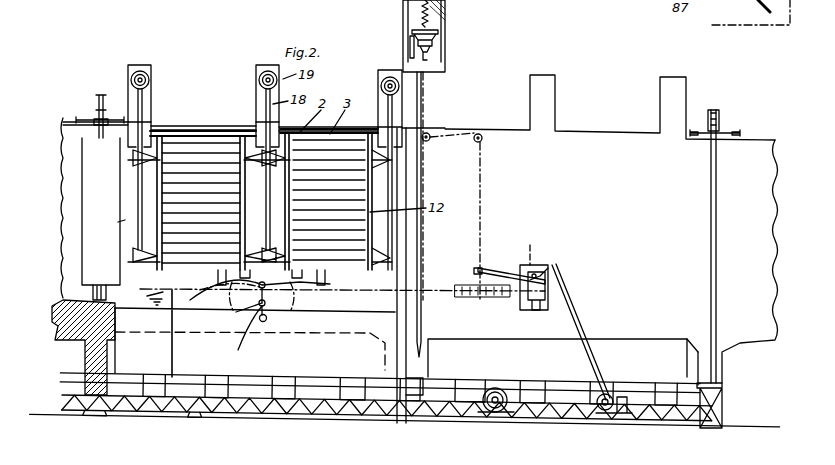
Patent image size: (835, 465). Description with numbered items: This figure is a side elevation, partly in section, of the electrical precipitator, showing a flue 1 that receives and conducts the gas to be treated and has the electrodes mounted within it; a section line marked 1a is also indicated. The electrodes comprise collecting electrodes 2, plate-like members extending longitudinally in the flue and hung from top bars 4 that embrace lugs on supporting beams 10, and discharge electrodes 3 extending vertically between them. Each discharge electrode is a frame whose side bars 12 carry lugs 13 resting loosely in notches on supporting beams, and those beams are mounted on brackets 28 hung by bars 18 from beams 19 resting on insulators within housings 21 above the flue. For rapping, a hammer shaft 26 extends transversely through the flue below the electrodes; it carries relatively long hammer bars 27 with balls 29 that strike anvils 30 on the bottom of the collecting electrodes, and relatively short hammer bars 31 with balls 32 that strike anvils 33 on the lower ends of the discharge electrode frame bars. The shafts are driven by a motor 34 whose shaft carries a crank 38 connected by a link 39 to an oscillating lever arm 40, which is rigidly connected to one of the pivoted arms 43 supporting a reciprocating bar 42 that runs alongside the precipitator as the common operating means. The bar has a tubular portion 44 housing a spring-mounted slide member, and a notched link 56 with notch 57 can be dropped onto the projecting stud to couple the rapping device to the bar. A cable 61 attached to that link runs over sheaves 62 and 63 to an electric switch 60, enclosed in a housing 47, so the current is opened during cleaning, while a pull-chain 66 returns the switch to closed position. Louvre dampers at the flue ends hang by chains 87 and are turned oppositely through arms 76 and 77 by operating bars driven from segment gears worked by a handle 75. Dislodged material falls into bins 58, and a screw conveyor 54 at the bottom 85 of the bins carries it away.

The flue 1 is at (160, 180).
The section line 1a- 1a is at (200, 283).
The collecting electrode 2 is at (168, 134).
The discharge electrode 3 is at (200, 136).
The top bar 4 is at (746, 18).
The supporting beam 10 is at (375, 140).
The side bar 12 is at (155, 238).
The lug 13 is at (384, 162).
The bar 18 is at (143, 103).
The beam 19 is at (130, 78).
The housing 21 is at (258, 77).
The hammer shaft 26 is at (259, 286).
The long hammer bar 27 is at (247, 332).
The bracket 28 is at (131, 160).
The ball 29 is at (267, 319).
The anvil 30 is at (215, 285).
The short hammer bar 31 is at (300, 295).
The ball 32 is at (255, 306).
The anvil 33 is at (150, 306).
The motor 34 is at (492, 414).
The crank 38 is at (612, 395).
The link 39 is at (582, 310).
The oscillating lever arm 40 is at (546, 268).
The reciprocating bar 42 is at (434, 294).
The pivoted arm 43 is at (533, 246).
The tubular portion 44 is at (487, 298).
The housing 47 is at (442, 30).
The screw conveyor 54 is at (245, 410).
The link 56 is at (518, 273).
The notch 57 is at (476, 272).
The bin 58 is at (563, 358).
The electric switch 60 is at (405, 25).
The cable 61 is at (491, 221).
The sheave 62 is at (482, 140).
The sheave 63 is at (432, 135).
The pull-chain 66 is at (420, 230).
The handle 75 is at (770, 15).
The arm 76 is at (728, 131).
The arm 77 is at (703, 133).
The bottom 85 is at (228, 388).
The chain 87 is at (722, 115).